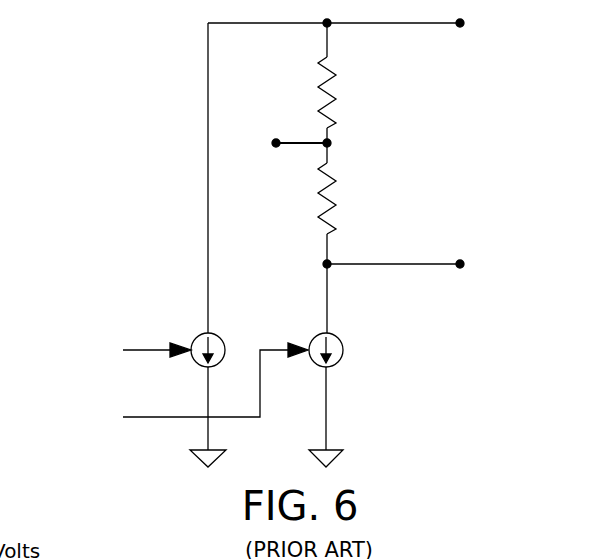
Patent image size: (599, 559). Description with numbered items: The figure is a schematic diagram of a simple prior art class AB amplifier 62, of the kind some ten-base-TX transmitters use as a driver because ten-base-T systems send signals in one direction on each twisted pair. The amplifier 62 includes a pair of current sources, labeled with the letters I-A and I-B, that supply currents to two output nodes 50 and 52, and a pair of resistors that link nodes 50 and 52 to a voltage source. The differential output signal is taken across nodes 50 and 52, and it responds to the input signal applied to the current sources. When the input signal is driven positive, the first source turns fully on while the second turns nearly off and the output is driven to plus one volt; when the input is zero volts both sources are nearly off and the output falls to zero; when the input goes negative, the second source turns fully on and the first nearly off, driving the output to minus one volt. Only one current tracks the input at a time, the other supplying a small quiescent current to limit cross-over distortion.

The output node 50 is at (330, 20).
The output node 52 is at (330, 267).
The class AB amplifier 62 is at (284, 233).